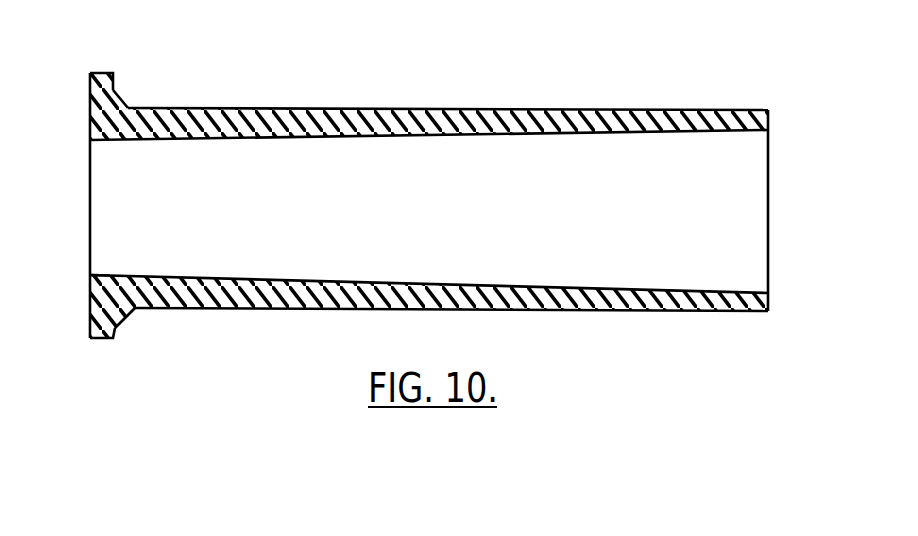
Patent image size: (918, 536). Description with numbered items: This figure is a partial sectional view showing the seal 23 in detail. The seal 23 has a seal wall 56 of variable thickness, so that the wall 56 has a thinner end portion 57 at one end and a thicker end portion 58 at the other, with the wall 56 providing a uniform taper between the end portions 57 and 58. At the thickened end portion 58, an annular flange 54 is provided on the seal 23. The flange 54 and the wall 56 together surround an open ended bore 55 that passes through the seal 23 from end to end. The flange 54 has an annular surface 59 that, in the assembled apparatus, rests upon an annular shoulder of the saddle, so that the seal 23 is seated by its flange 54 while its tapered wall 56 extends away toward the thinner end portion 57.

The seal 23 is at (615, 310).
The annular flange 54 is at (103, 73).
The open ended bore 55 is at (118, 185).
The seal wall 56 is at (370, 110).
The thinner end portion 57 is at (768, 110).
The thicker end portion 58 is at (142, 108).
The annular surface 59 is at (118, 327).